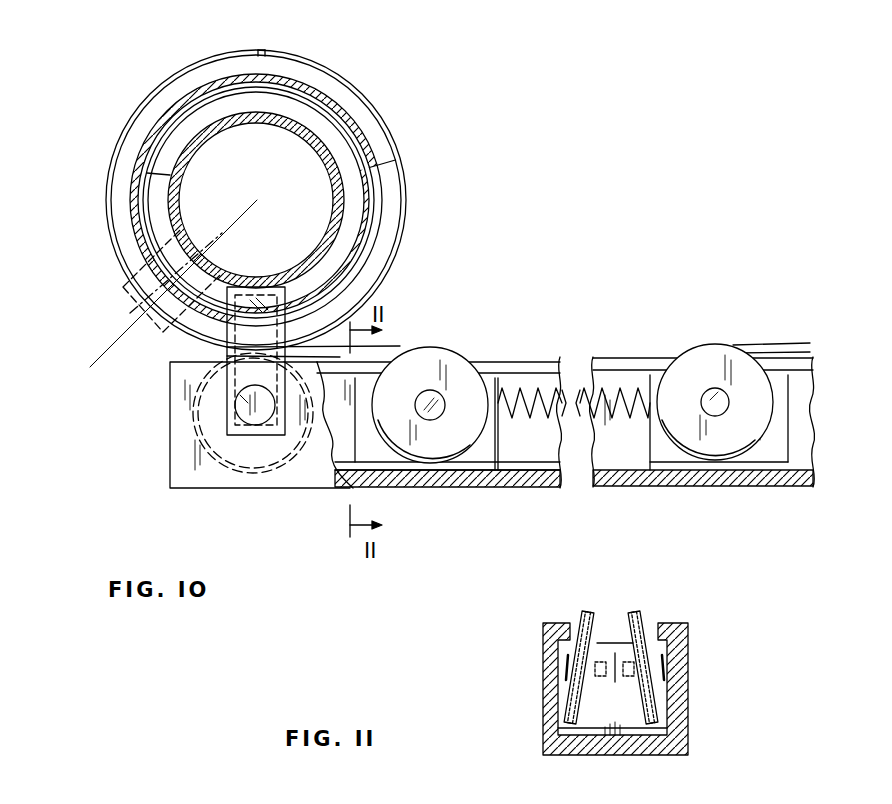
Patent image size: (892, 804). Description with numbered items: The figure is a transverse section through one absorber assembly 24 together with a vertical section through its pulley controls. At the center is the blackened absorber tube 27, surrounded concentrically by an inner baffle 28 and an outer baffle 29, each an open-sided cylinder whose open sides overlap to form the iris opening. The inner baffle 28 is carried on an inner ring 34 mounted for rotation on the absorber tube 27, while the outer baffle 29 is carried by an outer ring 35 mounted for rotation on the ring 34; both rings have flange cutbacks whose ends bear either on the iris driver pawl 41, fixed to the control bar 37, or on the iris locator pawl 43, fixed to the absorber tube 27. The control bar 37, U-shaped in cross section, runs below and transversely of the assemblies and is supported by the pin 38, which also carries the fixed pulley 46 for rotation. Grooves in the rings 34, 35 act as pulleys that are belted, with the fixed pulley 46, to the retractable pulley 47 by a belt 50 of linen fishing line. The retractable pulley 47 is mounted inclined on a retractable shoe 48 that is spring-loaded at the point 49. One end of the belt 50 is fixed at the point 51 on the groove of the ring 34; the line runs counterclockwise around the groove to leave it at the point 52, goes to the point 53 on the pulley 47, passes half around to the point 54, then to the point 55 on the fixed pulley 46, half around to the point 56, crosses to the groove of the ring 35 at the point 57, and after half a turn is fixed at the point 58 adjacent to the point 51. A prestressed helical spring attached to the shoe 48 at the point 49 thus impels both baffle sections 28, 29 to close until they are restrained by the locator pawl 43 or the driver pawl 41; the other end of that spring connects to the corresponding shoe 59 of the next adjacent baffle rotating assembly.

In FIG. 10, the absorber assembly 24 is at (398, 100).
In FIG. 10, the absorber tube 27 is at (300, 140).
In FIG. 10, the inner baffle 28 is at (372, 210).
In FIG. 10, the outer baffle 29 is at (133, 198).
In FIG. 10, the inner ring 34 is at (170, 152).
In FIG. 10, the outer ring 35 is at (178, 92).
In FIG. 10, the control bar 37 is at (455, 488).
In FIG. 11, the control bar 37 is at (550, 683).
In FIG. 10, the pin 38 is at (260, 425).
In FIG. 10, the iris driver pawl 41 is at (232, 392).
In FIG. 10, the iris locator pawl 43 is at (123, 290).
In FIG. 10, the fixed pulley 46 is at (205, 470).
In FIG. 10, the retractable pulley 47 is at (412, 389).
In FIG. 11, the retractable pulley 47 is at (582, 622).
In FIG. 10, the retractable shoe 48 is at (497, 453).
In FIG. 11, the retractable shoe 48 is at (624, 717).
In FIG. 10, the spring attachment point 49 is at (575, 392).
In FIG. 11, the spring attachment point 49 is at (616, 652).
In FIG. 10, the belt 50 is at (400, 346).
In FIG. 11, the belt 50 is at (591, 612).
In FIG. 10, the belt fixing point 51 is at (258, 50).
In FIG. 10, the belt departure point 52 is at (242, 292).
In FIG. 10, the belt entry point on retractable pulley 53 is at (430, 348).
In FIG. 10, the belt exit point on retractable pulley 54 is at (430, 462).
In FIG. 10, the belt entry point on fixed pulley 55 is at (252, 472).
In FIG. 10, the belt exit point on fixed pulley 56 is at (240, 390).
In FIG. 10, the belt entry point on outer ring 57 is at (280, 292).
In FIG. 10, the belt terminal fixing point 58 is at (268, 52).
In FIG. 10, the adjacent shoe 59 is at (780, 435).